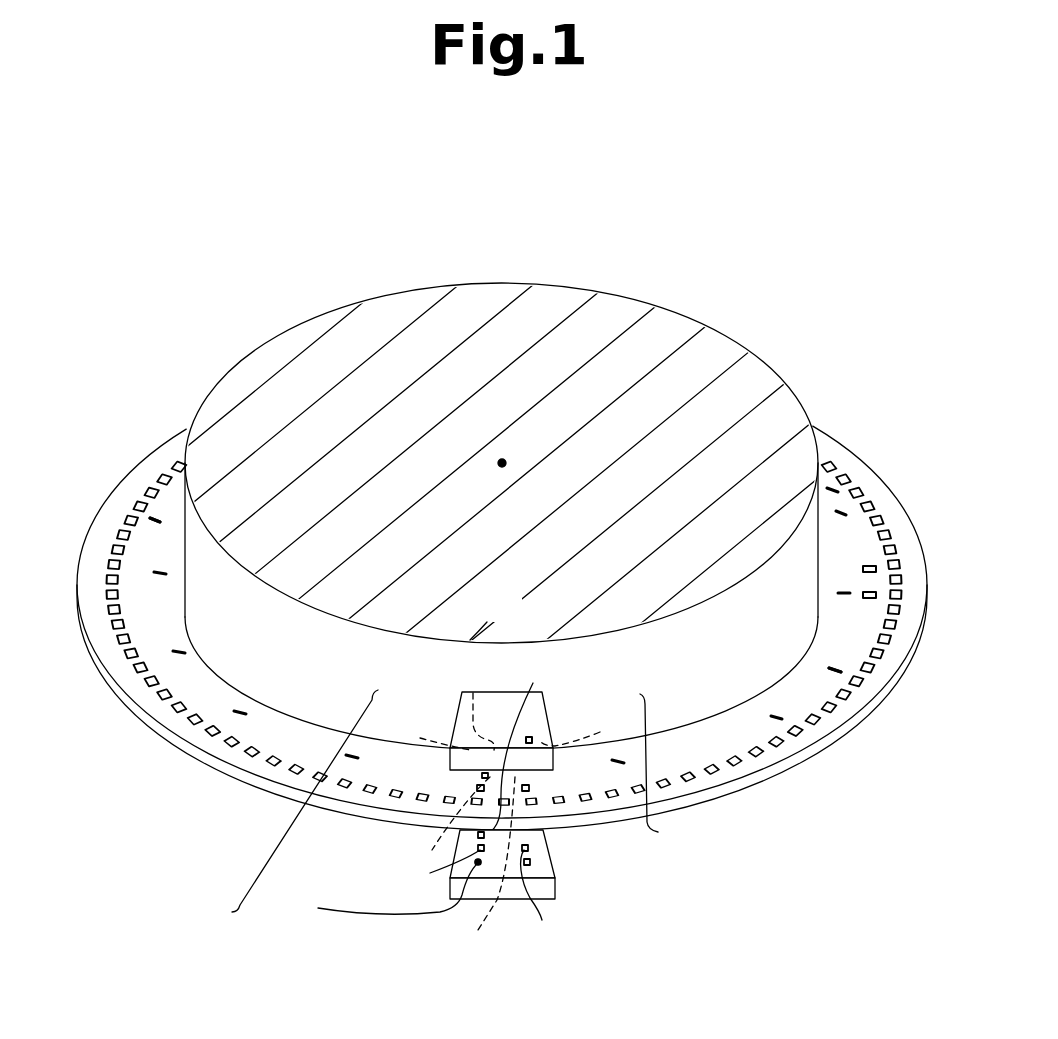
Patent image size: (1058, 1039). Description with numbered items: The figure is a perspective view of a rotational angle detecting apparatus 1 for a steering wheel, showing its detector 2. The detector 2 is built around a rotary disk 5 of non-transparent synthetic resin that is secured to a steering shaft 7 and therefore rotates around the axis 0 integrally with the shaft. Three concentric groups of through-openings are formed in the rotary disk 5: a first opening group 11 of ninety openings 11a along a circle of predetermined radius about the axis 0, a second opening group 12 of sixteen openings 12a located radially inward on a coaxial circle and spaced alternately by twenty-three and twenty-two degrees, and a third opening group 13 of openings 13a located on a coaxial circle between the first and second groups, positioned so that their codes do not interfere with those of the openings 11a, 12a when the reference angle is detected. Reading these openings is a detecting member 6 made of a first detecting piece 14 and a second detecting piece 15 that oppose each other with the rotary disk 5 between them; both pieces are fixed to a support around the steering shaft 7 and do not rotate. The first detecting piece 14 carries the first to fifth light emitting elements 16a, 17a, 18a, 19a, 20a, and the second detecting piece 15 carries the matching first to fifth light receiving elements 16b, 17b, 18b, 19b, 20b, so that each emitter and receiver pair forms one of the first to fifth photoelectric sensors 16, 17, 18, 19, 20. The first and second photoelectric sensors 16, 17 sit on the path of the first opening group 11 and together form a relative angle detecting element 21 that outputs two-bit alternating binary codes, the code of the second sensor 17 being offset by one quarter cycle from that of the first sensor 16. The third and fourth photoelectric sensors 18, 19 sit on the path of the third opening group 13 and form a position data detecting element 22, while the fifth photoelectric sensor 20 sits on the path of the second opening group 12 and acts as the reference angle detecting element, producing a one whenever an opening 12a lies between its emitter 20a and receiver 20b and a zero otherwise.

The rotational angle detecting apparatus 1 is at (829, 398).
The detector 2 is at (661, 891).
The rotary disk 5 is at (135, 690).
The detecting member 6 is at (574, 921).
The steering shaft 7 is at (670, 332).
The axis O 0 is at (491, 478).
The first opening group 11 is at (858, 681).
The openings 11a is at (858, 704).
The second opening group 12 is at (808, 664).
The openings 12a is at (815, 667).
The third opening group 13 is at (868, 560).
The openings 13a is at (874, 592).
The first detecting piece 14 is at (463, 703).
The second detecting piece 15 is at (460, 898).
The first photoelectric sensor 16 is at (305, 801).
The first light emitting element 16a is at (434, 721).
The first light receiving element 16b is at (368, 893).
The second photoelectric sensor 17 is at (669, 772).
The second light emitting element 17a is at (590, 725).
The second light receiving element 17b is at (528, 862).
The third photoelectric sensor 18 is at (496, 616).
The third light emitting element 18a is at (565, 660).
The third light receiving element 18b is at (542, 670).
The fourth photoelectric sensor 19 is at (567, 945).
The fourth light emitting element 19a is at (469, 938).
The fourth light receiving element 19b is at (537, 938).
The fifth photoelectric sensor 20 is at (366, 834).
The fifth light emitting element 20a is at (425, 850).
The fifth light receiving element 20b is at (430, 833).
The relative angle detecting element 21 is at (544, 869).
The position data detecting element 22 is at (536, 737).